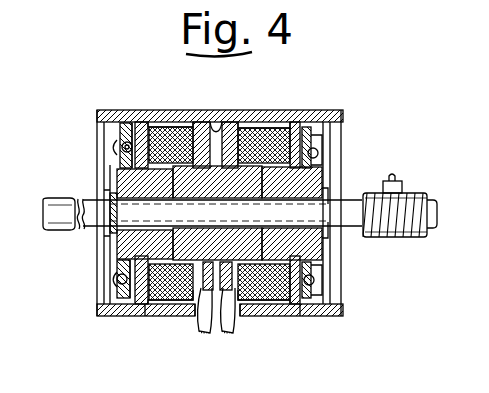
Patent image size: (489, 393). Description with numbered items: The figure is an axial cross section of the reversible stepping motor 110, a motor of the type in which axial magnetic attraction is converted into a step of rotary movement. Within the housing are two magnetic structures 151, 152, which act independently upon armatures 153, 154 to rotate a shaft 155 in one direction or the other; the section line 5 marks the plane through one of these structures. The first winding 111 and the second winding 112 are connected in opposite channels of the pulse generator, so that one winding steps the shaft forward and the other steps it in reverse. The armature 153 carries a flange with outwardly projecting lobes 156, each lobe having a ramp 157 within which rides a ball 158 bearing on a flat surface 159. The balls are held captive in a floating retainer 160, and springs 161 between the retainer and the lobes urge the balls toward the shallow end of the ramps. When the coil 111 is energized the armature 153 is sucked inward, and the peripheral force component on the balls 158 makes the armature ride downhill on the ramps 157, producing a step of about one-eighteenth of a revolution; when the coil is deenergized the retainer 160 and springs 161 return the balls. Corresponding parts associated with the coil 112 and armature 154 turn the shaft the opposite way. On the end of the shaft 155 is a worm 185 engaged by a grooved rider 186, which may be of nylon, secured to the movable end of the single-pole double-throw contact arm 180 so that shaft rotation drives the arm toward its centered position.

The section line 5- 5 is at (122, 97).
The motor 110 is at (166, 122).
The winding 111 is at (196, 122).
The second winding 112 is at (266, 122).
The magnetic structure 151 is at (200, 318).
The magnetic structure 152 is at (252, 316).
The armature 153 is at (120, 248).
The armature 154 is at (326, 180).
The shaft 155 is at (436, 205).
The lobes 156 is at (120, 126).
The ramp 157 is at (121, 148).
The ball 158 is at (118, 157).
The flat surface 159 is at (142, 317).
The floating retainer 160 is at (128, 124).
The springs 161 is at (316, 153).
The contact arm 180 is at (393, 173).
The worm 185 is at (410, 237).
The grooved rider 186 is at (402, 183).